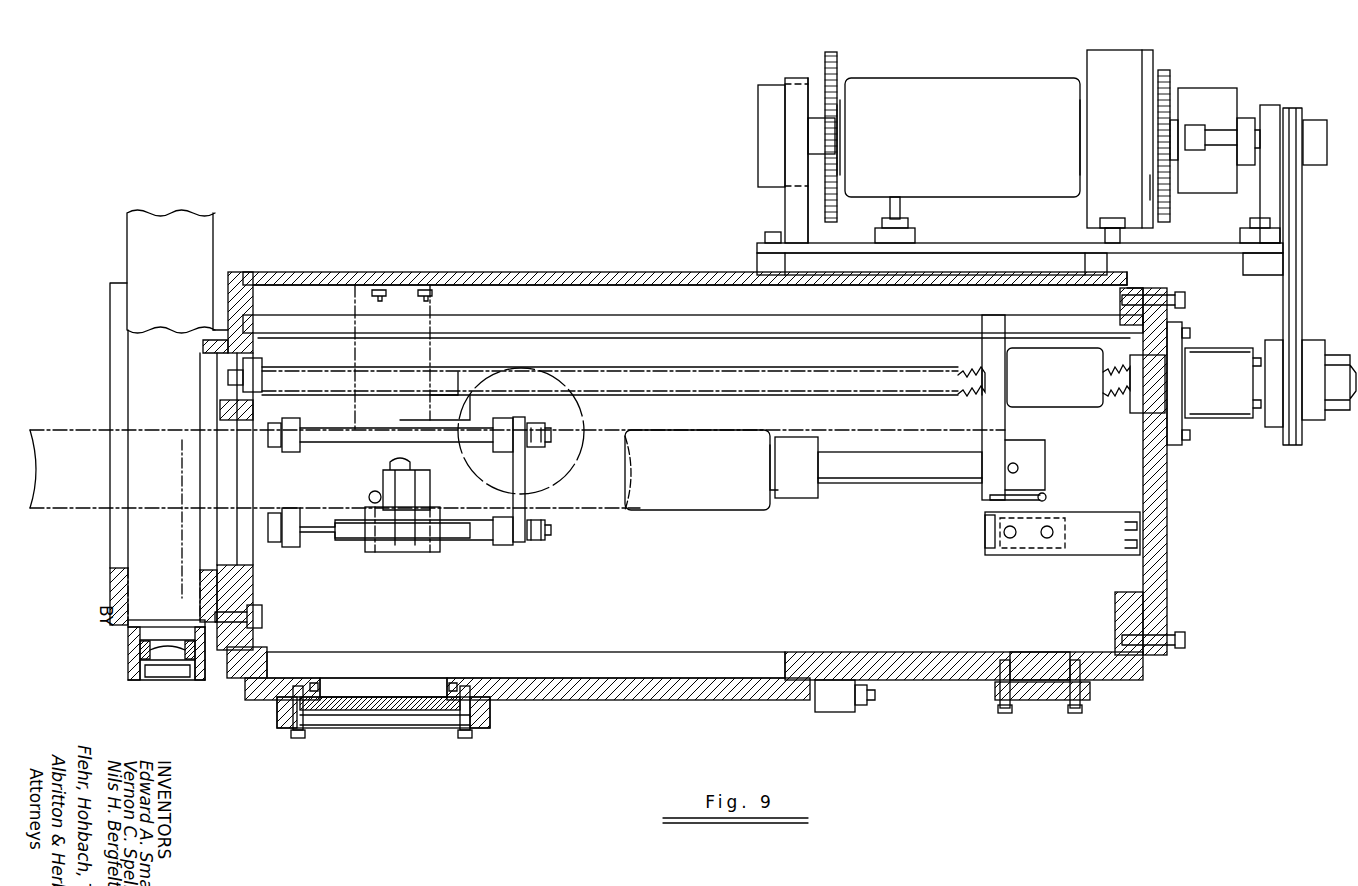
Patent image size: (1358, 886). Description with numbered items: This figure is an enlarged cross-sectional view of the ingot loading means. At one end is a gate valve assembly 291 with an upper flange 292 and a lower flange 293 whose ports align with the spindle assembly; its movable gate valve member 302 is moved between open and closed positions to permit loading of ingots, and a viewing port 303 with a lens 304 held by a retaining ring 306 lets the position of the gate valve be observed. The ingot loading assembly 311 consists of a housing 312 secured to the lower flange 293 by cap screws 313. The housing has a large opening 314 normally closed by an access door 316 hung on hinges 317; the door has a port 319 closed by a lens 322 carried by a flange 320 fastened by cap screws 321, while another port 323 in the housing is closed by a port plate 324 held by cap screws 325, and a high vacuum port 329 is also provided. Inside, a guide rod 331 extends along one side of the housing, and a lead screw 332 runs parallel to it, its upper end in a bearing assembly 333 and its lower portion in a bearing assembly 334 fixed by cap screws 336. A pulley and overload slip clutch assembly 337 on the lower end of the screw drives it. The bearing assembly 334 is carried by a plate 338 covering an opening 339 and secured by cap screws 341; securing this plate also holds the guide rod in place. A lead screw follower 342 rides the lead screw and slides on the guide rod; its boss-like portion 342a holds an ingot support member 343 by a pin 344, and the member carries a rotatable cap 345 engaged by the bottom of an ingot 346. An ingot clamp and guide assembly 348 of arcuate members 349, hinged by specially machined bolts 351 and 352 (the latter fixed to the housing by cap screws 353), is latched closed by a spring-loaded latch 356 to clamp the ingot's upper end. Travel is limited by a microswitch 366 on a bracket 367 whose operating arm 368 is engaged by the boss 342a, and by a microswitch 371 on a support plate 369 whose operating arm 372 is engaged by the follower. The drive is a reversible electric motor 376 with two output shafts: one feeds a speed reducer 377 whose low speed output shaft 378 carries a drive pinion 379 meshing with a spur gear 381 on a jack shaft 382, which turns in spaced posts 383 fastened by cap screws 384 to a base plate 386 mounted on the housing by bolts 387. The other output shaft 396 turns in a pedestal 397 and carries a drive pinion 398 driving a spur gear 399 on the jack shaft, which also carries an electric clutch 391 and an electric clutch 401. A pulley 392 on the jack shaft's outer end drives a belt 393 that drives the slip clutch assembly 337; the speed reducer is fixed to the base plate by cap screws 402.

The gate valve assembly 291 is at (218, 245).
The upper flange 292 is at (118, 286).
The lower flange 293 is at (222, 290).
The gate valve member 302 is at (178, 568).
The viewing port 303 is at (188, 680).
The lens 304 is at (166, 644).
The retaining ring 306 is at (203, 670).
The ingot loading assembly 311 is at (618, 270).
The housing 312 is at (344, 271).
The cap screws 313 is at (262, 617).
The large opening 314 is at (756, 652).
The access door 316 is at (627, 700).
The hinges 317 is at (852, 712).
The port 319 is at (314, 686).
The flange 320 is at (490, 713).
The cap screws 321 is at (298, 738).
The lens 322 is at (402, 710).
The port 323 is at (1020, 670).
The port plate 324 is at (1040, 700).
The cap screws 325 is at (1008, 714).
The high vacuum port 329 is at (576, 462).
The guide rod 331 is at (593, 318).
The lead screw 332 is at (967, 394).
The bearing assembly 333 is at (258, 366).
The bearing assembly 334 is at (1232, 394).
The cap screws 336 is at (1192, 334).
The pulley and overload slip clutch assembly 337 is at (1270, 433).
The plate 338 is at (1167, 576).
The opening 339 is at (1116, 600).
The cap screws 341 is at (1185, 298).
The lead screw follower 342 is at (1040, 391).
The boss-like portion 342a is at (1024, 490).
The ingot support member 343 is at (885, 476).
The pin 344 is at (1017, 464).
The rotatable cap 345 is at (798, 500).
The ingot 346 is at (682, 478).
The ingot clamp and guide assembly 348 is at (379, 481).
The arcuate members 349 is at (470, 505).
The machined bolts 351 is at (343, 538).
The machined bolts 352 is at (411, 434).
The cap screws 353 is at (240, 454).
The spring-loaded latch 356 is at (406, 552).
The microswitch 366 is at (983, 538).
The bracket 367 is at (1110, 542).
The operating arm 368 is at (1046, 497).
The support plate 369 is at (440, 354).
The microswitch 371 is at (326, 532).
The operating arm 372 is at (370, 470).
The reversible electric motor 376 is at (938, 148).
The speed reducer 377 is at (1100, 141).
The low speed output shaft 378 is at (1217, 132).
The drive pinion 379 is at (1158, 184).
The spur gear 381 is at (1168, 64).
The jack shaft 382 is at (1250, 150).
The posts 383 is at (902, 206).
The cap screws 384 is at (912, 228).
The base plate 386 is at (1026, 246).
The bolts 387 is at (764, 237).
The electric clutch 391 is at (1220, 172).
The pulley 392 is at (1314, 120).
The belt 393 is at (1300, 259).
The output shaft 396 is at (808, 148).
The pedestal 397 is at (792, 207).
The drive pinion 398 is at (842, 182).
The spur gear 399 is at (838, 50).
The electric clutch 401 is at (762, 109).
The cap screws 402 is at (1110, 218).